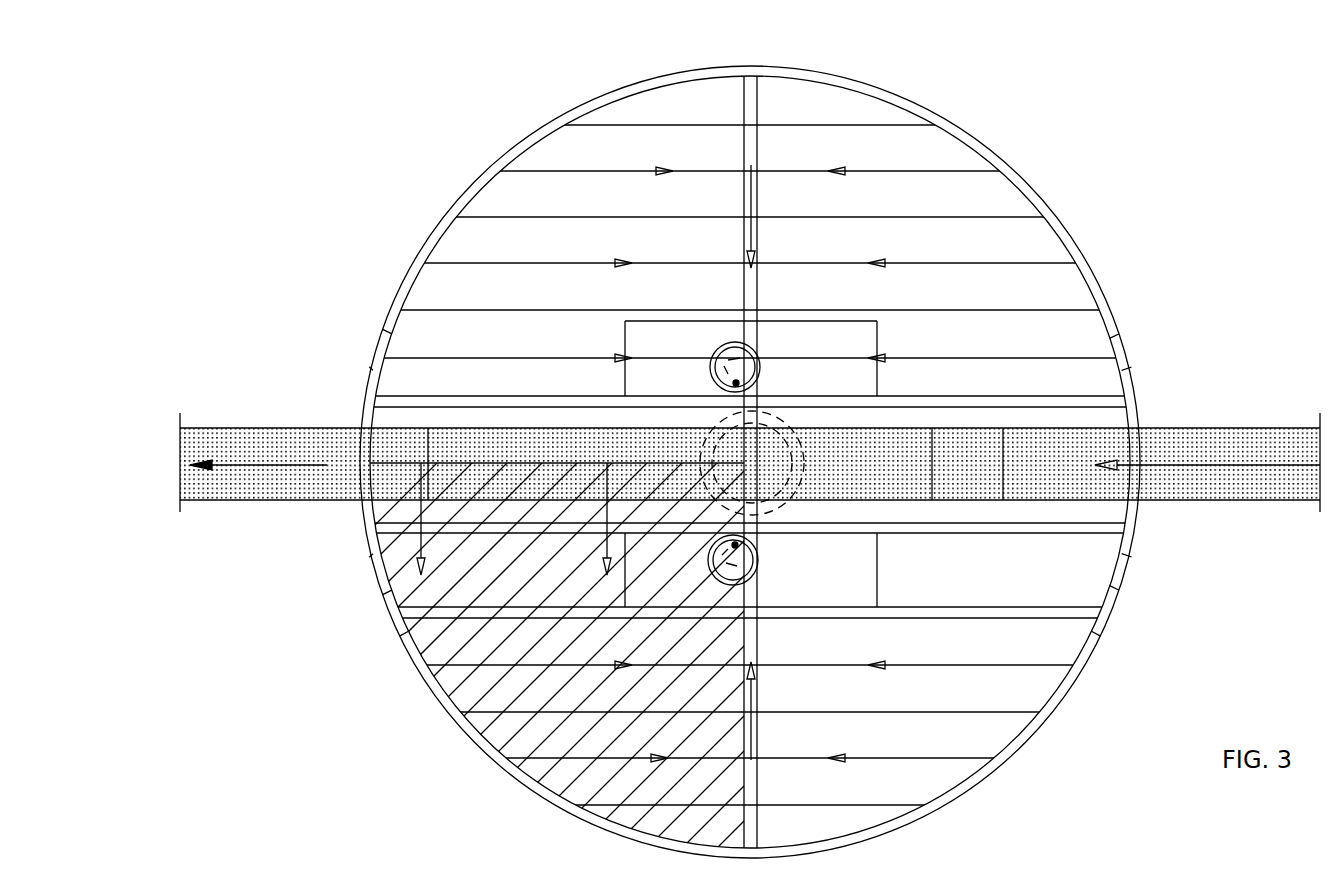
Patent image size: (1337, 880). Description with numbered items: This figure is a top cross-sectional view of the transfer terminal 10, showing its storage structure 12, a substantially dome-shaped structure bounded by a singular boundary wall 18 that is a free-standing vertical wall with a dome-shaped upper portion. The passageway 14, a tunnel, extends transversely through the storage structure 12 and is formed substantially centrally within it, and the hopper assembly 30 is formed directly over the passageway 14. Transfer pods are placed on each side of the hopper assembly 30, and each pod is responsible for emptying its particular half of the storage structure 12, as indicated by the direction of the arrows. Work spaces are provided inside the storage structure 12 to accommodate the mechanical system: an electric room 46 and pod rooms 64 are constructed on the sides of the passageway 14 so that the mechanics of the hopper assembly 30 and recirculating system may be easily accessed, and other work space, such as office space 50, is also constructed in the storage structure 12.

The transfer terminal 10 is at (1052, 140).
The storage structure 12 is at (830, 75).
The passageway 14 is at (1080, 447).
The boundary wall 18 is at (710, 73).
The hopper assembly 30 is at (815, 463).
The electric room 46 is at (578, 583).
The office space 50 is at (1058, 583).
The pod room 64 is at (860, 370).